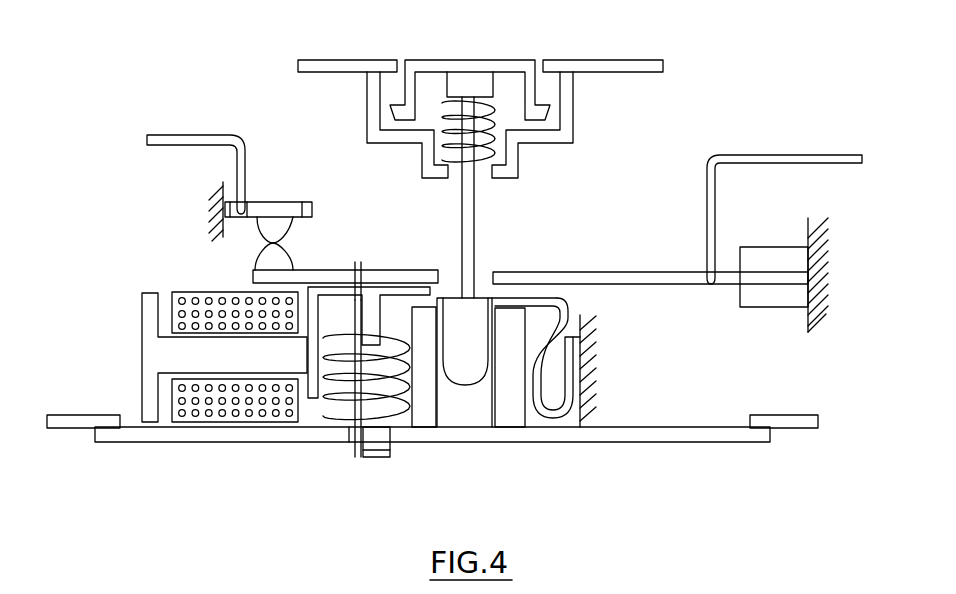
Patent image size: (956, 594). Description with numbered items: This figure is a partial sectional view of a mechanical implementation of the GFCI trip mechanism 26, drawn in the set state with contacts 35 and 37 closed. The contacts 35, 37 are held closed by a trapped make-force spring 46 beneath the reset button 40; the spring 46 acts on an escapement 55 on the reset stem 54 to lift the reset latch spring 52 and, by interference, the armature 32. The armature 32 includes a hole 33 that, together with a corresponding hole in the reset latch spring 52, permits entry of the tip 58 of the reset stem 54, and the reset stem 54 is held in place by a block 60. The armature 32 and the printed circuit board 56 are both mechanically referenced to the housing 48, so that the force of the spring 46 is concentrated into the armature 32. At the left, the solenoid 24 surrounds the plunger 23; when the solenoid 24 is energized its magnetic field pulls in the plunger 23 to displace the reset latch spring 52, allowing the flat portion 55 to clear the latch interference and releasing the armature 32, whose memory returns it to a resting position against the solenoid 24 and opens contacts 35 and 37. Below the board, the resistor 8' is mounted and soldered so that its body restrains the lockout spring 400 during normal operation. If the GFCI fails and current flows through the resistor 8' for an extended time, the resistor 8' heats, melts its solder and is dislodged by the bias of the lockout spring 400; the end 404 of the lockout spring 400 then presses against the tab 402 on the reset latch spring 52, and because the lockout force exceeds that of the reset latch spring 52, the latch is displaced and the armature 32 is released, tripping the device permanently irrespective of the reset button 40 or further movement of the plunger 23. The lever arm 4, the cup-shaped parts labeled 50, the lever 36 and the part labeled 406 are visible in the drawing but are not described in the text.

The trip mechanism 26 is at (329, 56).
The reset button 40 is at (428, 60).
The make-force spring 46 is at (497, 112).
The housing 48 is at (630, 60).
The cup housing 50 is at (545, 117).
The reset stem 54 is at (473, 238).
The lever 36 is at (168, 134).
The contact 37 is at (296, 218).
The contact 35 is at (258, 252).
The lever arm 4 is at (772, 160).
The armature 32 is at (382, 270).
The hole 33 is at (452, 280).
The tab 402 is at (362, 306).
The end of lock-out spring 404 is at (352, 445).
The lockout spring 400 is at (316, 420).
The nut 406 is at (382, 433).
The resistor 8' is at (389, 485).
The tip 58 is at (475, 385).
The escapement 55 is at (479, 308).
The block 60 is at (503, 418).
The reset latch spring 52 is at (575, 298).
The plunger 23 is at (142, 355).
The solenoid 24 is at (198, 422).
The printed circuit board 56 is at (720, 444).